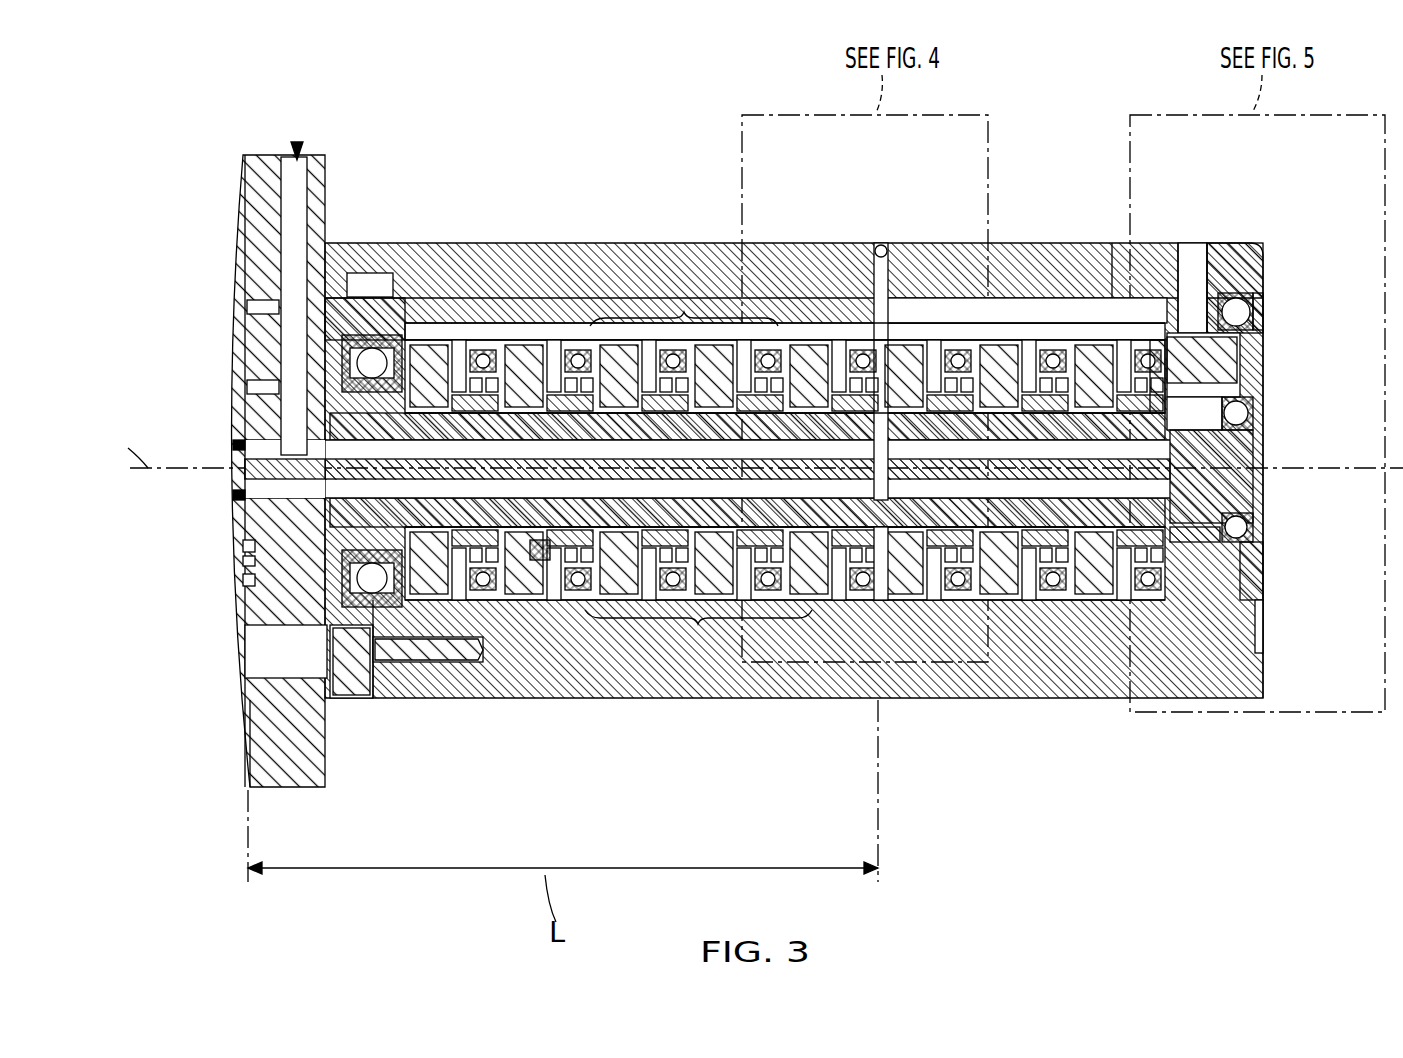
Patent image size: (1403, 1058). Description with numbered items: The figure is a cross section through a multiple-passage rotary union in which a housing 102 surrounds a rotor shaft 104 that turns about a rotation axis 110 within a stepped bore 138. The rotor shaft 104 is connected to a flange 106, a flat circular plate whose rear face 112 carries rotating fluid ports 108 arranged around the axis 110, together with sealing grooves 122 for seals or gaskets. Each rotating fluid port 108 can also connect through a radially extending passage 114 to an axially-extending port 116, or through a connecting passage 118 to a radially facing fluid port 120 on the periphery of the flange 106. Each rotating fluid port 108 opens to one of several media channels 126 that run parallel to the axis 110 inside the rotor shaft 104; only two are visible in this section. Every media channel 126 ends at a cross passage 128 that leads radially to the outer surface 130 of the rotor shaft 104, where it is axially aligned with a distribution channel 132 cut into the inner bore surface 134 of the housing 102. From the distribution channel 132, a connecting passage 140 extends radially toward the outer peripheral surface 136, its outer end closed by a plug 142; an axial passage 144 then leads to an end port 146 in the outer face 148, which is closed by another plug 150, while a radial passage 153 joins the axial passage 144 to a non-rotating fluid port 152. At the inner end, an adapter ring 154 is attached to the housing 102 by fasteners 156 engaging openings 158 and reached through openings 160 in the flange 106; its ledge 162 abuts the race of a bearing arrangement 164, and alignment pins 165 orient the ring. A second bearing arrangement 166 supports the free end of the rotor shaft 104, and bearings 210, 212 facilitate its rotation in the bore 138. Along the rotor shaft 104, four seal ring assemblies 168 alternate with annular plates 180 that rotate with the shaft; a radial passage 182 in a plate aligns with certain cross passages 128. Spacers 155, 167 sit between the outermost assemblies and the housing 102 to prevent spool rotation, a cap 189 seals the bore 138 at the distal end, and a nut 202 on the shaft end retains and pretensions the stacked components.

The housing 102 is at (680, 258).
The rotor shaft 104 is at (1240, 485).
The flange 106 is at (293, 772).
The rotating fluid ports 108 is at (240, 445).
The rotation axis 110 is at (119, 428).
The rear face 112 is at (242, 710).
The radially extending passage 114 is at (252, 395).
The axially-extending port 116 is at (262, 378).
The connecting passage 118 is at (293, 262).
The radially facing fluid port 120 is at (297, 142).
The sealing grooves 122 is at (245, 562).
The media channels 126 is at (805, 440).
The cross passage 128 is at (912, 582).
The outer surface 130 is at (536, 576).
The distribution channel 132 is at (862, 336).
The inner bore surface 134 is at (998, 602).
The outer peripheral surface 136 is at (1114, 262).
The stepped bore 138 is at (1298, 438).
The connecting passage 140 is at (892, 278).
The plug 142 is at (882, 246).
The axial passage 144 is at (1012, 312).
The end port 146 is at (1258, 302).
The outer face 148 is at (1254, 282).
The plug 150 is at (1248, 323).
The non-rotating fluid port 152 is at (1196, 262).
The radial passage 153 is at (1200, 282).
The adapter ring 154 is at (350, 692).
The spacer 155 is at (412, 345).
The fasteners 156 is at (410, 652).
The openings 158 is at (476, 652).
The openings 160 is at (262, 650).
The ledge 162 is at (365, 600).
The bearing arrangement 164 is at (422, 362).
The alignment pins 165 is at (382, 285).
The second bearing arrangement 166 is at (1262, 422).
The spacer 167 is at (1180, 545).
The seal ring assemblies 168 is at (698, 452).
The annular plate 180 is at (1192, 250).
The radial passage 182 is at (1152, 380).
The cap 189 is at (1262, 565).
The nut 202 is at (1183, 535).
The bearing 210 is at (1256, 526).
The bearing 212 is at (365, 404).